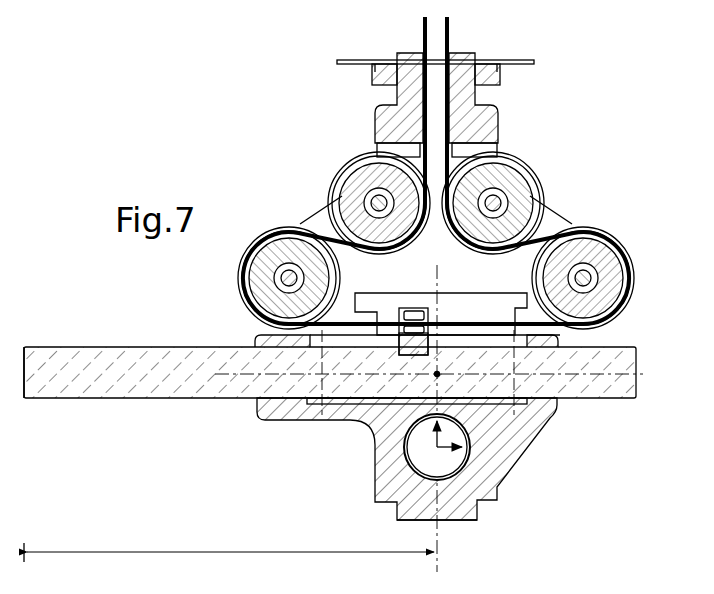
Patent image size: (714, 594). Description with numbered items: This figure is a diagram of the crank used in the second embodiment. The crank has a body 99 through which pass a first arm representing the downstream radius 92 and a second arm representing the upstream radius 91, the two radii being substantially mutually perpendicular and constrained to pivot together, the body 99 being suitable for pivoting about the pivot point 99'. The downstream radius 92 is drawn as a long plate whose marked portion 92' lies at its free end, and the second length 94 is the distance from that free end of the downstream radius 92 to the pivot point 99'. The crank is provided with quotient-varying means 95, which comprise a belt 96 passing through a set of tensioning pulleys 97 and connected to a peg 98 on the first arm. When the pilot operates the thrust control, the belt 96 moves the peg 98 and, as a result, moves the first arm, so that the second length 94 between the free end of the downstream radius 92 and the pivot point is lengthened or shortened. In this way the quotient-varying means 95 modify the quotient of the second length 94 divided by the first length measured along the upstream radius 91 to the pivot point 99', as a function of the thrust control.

The upstream radius 91 is at (455, 466).
The downstream radius 92 is at (333, 355).
The plate edge 92' is at (22, 327).
The second length 94 is at (229, 545).
The quotient-varying means 95 is at (247, 139).
The belt 96 is at (421, 33).
The tensioning pulleys 97 is at (345, 185).
The peg 98 is at (413, 310).
The body 99 is at (407, 459).
The pivot point 99' is at (439, 547).